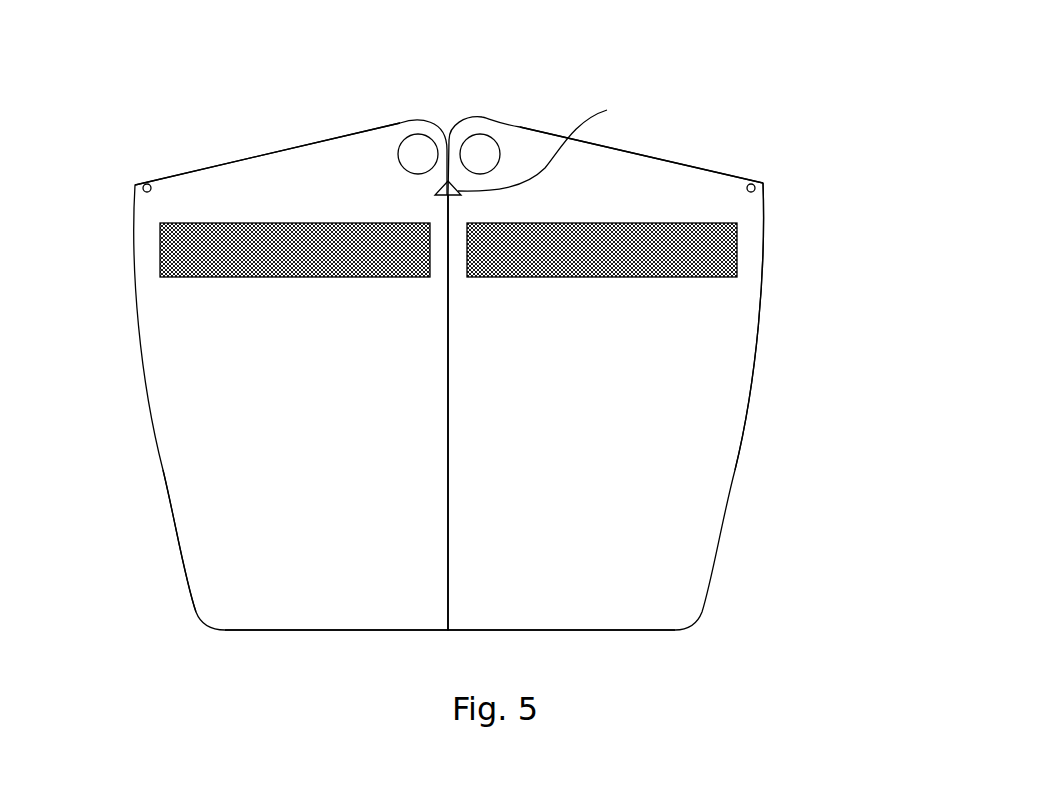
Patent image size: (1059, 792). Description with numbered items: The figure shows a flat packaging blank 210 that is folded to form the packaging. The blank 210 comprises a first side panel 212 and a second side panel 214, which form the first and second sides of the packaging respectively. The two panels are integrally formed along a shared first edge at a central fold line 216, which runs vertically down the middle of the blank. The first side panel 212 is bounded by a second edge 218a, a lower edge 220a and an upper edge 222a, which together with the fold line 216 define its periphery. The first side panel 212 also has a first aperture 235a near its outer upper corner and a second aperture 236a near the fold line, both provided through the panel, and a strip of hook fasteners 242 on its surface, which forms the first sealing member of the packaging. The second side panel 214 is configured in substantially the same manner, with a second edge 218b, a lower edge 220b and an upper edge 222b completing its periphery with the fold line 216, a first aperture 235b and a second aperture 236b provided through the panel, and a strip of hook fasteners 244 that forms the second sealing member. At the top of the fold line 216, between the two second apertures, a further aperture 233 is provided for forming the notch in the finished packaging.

The packaging blank 210 is at (507, 373).
The first side panel 212 is at (330, 432).
The second side panel 214 is at (617, 432).
The fold line 216 is at (447, 588).
The second edge 218a is at (170, 512).
The second edge 218b is at (753, 370).
The lower edge 220a is at (240, 632).
The lower edge 220b is at (627, 632).
The upper edge 222a is at (250, 156).
The upper edge 222b is at (672, 161).
The further aperture 233 is at (552, 137).
The first aperture 235a is at (137, 182).
The first aperture 235b is at (763, 183).
The second aperture 236a is at (418, 154).
The second aperture 236b is at (480, 154).
The strip of hook fasteners 242 is at (280, 307).
The strip of hook fasteners 244 is at (601, 262).